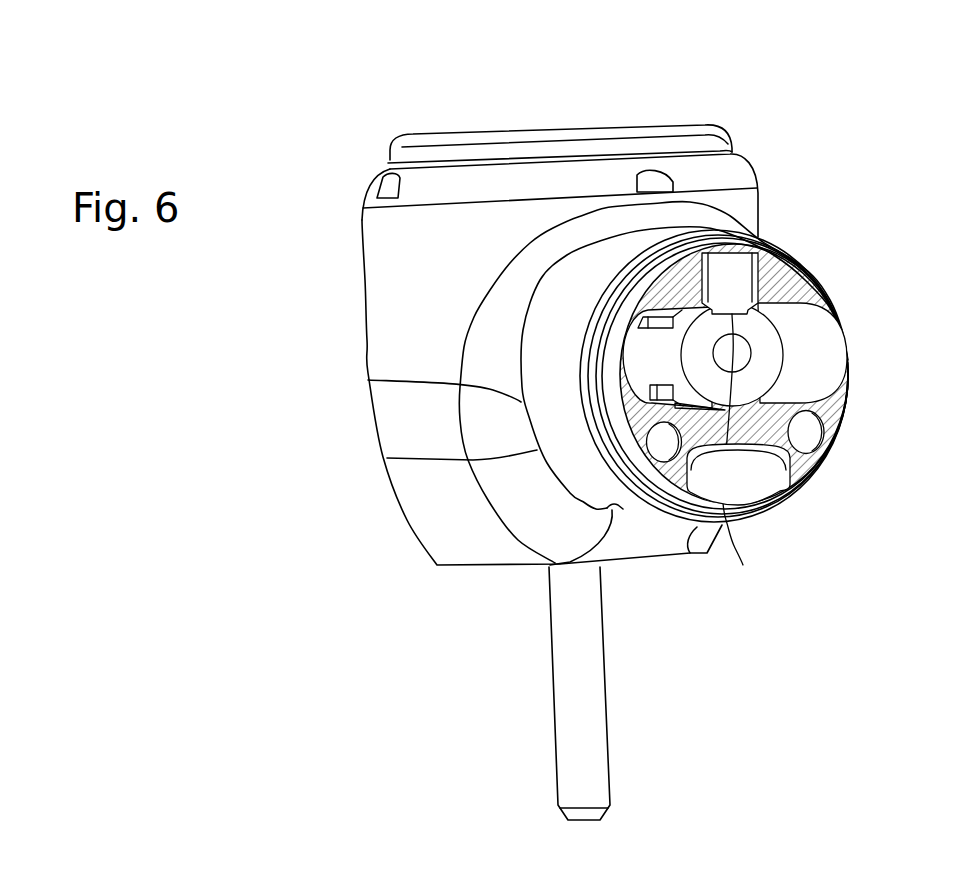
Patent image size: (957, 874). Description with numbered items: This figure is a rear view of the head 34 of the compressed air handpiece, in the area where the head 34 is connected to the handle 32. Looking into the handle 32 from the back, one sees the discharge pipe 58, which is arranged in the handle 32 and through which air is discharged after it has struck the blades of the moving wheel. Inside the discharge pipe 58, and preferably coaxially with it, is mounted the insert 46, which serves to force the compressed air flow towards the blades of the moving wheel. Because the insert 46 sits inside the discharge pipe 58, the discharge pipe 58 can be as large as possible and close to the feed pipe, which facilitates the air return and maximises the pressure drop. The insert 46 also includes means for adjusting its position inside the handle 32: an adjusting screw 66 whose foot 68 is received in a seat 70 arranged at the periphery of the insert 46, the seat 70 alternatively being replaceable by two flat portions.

The head 34 is at (752, 137).
The handle 32 is at (593, 470).
The adjusting screw 66 is at (737, 273).
The foot 68 is at (734, 294).
The discharge pipe 58 is at (795, 358).
The insert 46 is at (747, 375).
The seat 70 is at (748, 457).